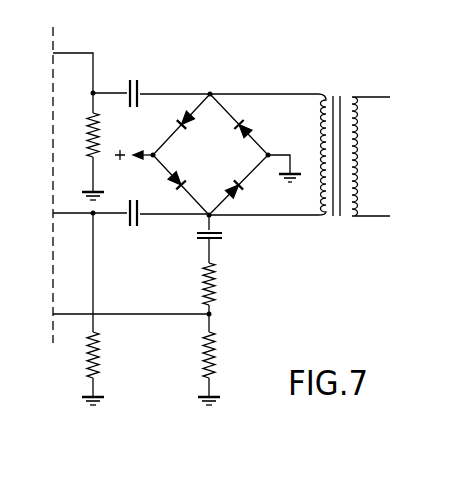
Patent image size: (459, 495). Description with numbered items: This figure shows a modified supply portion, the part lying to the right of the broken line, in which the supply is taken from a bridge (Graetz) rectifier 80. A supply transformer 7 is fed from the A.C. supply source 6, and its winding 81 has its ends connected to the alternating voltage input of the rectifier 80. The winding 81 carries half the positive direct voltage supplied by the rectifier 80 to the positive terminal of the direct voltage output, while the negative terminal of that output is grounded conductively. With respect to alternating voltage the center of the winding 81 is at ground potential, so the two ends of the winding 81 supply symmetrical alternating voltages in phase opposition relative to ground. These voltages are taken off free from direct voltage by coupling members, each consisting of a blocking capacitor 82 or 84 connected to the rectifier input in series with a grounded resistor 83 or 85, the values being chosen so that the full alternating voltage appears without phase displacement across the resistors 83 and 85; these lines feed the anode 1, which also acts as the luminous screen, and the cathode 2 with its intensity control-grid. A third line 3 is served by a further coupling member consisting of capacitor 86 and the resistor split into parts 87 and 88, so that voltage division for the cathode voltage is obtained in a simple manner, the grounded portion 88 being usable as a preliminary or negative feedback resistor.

The anode 1 is at (175, 86).
The cathode 2 is at (174, 223).
The third terminal line 3 is at (132, 323).
The A.C. supply source 6 is at (371, 156).
The supply transformer 7 is at (335, 146).
The bridge rectifier 80 is at (208, 155).
The winding 81 is at (267, 154).
The blocking capacitor 82 is at (144, 93).
The grounded resistor 83 is at (85, 146).
The blocking capacitor 84 is at (144, 212).
The grounded resistor 85 is at (101, 368).
The coupling member capacitor 86 is at (220, 239).
The coupling member resistor 87 is at (221, 288).
The grounded coupling member resistor 88 is at (217, 359).